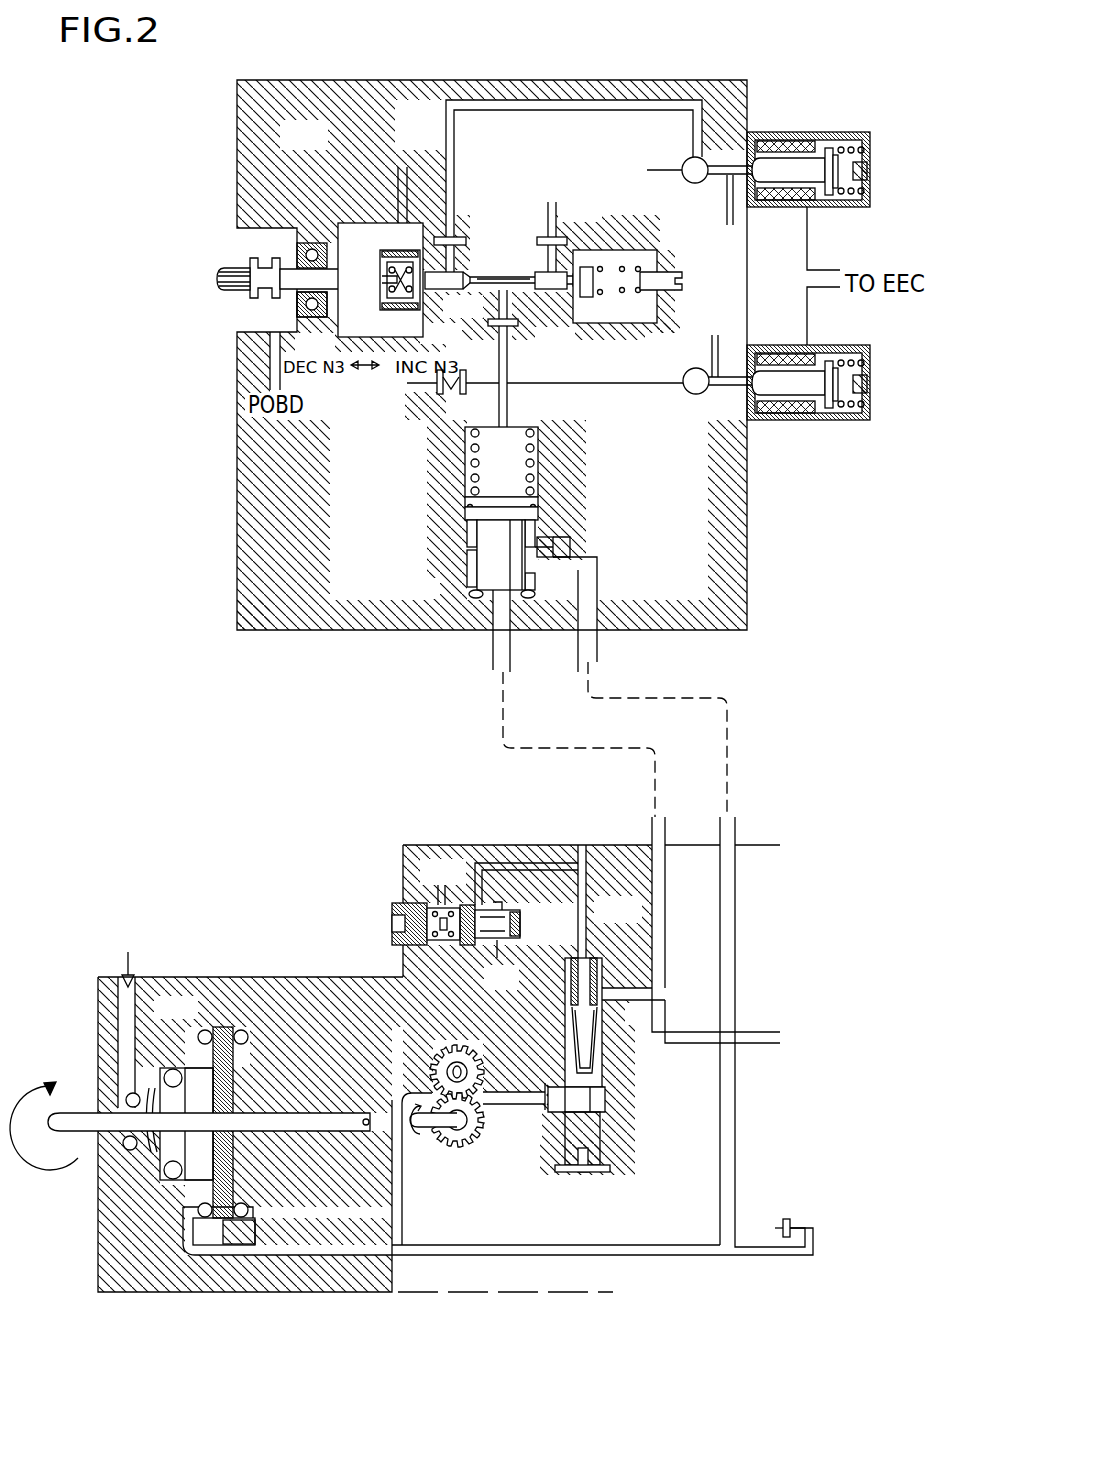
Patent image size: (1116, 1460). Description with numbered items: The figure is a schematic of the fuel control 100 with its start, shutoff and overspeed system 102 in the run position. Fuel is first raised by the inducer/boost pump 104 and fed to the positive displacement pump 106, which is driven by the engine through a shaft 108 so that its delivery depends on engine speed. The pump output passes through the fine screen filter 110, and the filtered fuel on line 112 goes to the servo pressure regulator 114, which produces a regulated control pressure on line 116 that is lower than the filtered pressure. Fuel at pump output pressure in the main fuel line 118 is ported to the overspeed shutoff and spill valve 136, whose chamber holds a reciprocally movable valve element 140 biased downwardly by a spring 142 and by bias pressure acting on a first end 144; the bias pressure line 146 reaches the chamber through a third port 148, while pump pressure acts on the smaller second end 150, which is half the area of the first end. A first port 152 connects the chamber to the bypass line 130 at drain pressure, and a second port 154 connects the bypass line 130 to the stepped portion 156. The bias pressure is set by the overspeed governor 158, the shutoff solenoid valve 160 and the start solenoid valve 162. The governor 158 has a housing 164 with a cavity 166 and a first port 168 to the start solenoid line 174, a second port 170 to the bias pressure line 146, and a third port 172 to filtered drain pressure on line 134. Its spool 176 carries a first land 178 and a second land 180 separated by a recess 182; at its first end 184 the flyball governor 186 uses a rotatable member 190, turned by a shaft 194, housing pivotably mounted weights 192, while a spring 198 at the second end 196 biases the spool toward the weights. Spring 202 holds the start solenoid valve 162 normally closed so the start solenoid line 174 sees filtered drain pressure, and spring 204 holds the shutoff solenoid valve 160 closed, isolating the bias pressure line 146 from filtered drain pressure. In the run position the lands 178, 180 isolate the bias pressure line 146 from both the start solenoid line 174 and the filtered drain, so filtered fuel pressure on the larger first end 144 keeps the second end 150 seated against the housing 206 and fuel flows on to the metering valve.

The fuel control 100 is at (390, 903).
The start, shutoff and overspeed system 102 is at (238, 256).
The inducer/boost pump 104 is at (192, 1062).
The positive displacement pump 106 is at (436, 1042).
The shaft 108 is at (93, 1128).
The fine screen filter 110 is at (607, 1053).
The line 112 is at (661, 168).
The servo pressure regulator 114 is at (485, 902).
The line 116 is at (498, 958).
The main fuel line 118 is at (657, 1009).
The bypass line 130 is at (592, 600).
The line 134 is at (396, 185).
The overspeed shutoff and spill valve 136 is at (508, 515).
The valve element 140 is at (495, 570).
The spring 142 is at (465, 480).
The first end 144 is at (540, 479).
The bias pressure line 146 is at (510, 406).
The third port 148 is at (470, 433).
The second end 150 is at (476, 594).
The first port 152 is at (556, 630).
The second port 154 is at (540, 513).
The stepped portion 156 is at (470, 531).
The overspeed governor 158 is at (287, 200).
The shutoff solenoid valve 160 is at (811, 399).
The start solenoid valve 162 is at (809, 179).
The housing 164 is at (555, 305).
The cavity 166 is at (502, 283).
The first port 168 is at (447, 291).
The second port 170 is at (498, 300).
The third port 172 is at (550, 266).
The start solenoid line 174 is at (568, 186).
The spool 176 is at (480, 274).
The first land 178 is at (460, 270).
The second land 180 is at (506, 358).
The recess 182 is at (478, 288).
The first end 184 is at (422, 298).
The flyball governor 186 is at (384, 258).
The rotatable member 190 is at (366, 312).
The pivotably mounted weights 192 is at (416, 262).
The shaft 194 is at (229, 292).
The second end 196 is at (608, 314).
The spring 198 is at (636, 300).
The spring 202 is at (847, 196).
The spring 204 is at (847, 406).
The housing 206 is at (467, 479).